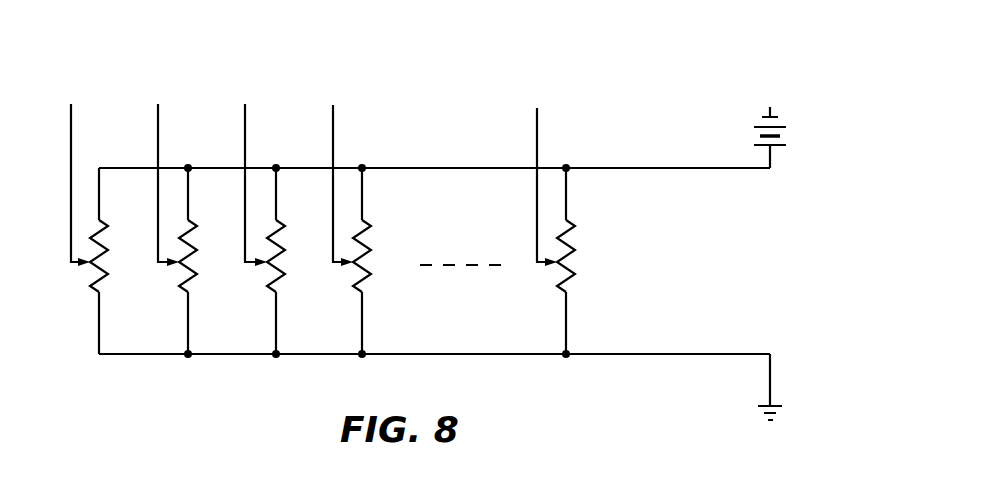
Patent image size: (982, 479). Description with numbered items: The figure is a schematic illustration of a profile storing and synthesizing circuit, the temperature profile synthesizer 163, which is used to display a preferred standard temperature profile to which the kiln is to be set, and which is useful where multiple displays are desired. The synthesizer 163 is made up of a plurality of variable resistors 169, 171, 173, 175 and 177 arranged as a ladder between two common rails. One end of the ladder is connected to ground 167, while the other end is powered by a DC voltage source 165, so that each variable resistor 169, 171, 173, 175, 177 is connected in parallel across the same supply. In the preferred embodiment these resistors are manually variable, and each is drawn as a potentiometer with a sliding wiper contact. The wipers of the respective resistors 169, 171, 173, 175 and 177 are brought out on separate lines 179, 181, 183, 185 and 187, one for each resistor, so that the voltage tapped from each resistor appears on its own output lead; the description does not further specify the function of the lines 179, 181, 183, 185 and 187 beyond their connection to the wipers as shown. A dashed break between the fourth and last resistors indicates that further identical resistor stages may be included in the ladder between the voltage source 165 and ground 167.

The temperature profile synthesizer 163 is at (127, 405).
The DC voltage source 165 is at (788, 137).
The ground 167 is at (760, 412).
The variable resistor 169 is at (105, 273).
The variable resistor 171 is at (194, 273).
The variable resistor 173 is at (282, 273).
The variable resistor 175 is at (368, 274).
The variable resistor 177 is at (572, 274).
The wiper output lead 179 is at (71, 123).
The wiper output lead 181 is at (158, 123).
The wiper output lead 183 is at (245, 123).
The wiper output lead 185 is at (333, 122).
The wiper output lead 187 is at (537, 122).